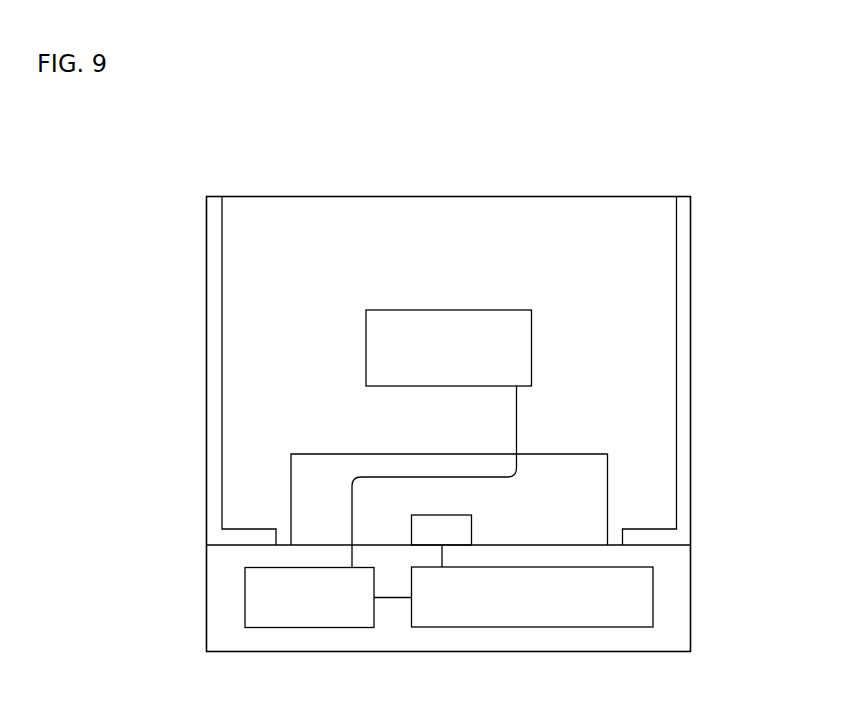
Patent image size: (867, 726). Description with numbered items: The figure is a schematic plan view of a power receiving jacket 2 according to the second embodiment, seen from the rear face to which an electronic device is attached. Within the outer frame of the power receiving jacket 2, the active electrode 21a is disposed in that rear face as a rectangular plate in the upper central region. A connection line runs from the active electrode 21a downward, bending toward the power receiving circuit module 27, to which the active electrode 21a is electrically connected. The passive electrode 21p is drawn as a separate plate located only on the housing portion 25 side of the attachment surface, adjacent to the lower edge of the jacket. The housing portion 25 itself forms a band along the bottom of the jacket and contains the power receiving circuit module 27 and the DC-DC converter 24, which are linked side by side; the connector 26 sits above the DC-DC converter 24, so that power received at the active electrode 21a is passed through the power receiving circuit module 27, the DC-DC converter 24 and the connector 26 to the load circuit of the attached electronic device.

The power receiving jacket 2 is at (740, 220).
The active electrode 21a is at (397, 315).
The passive electrode 21p is at (586, 475).
The DC-DC converter 24 is at (538, 617).
The housing portion 25 is at (706, 543).
The connector 26 is at (465, 528).
The power receiving circuit module 27 is at (309, 618).